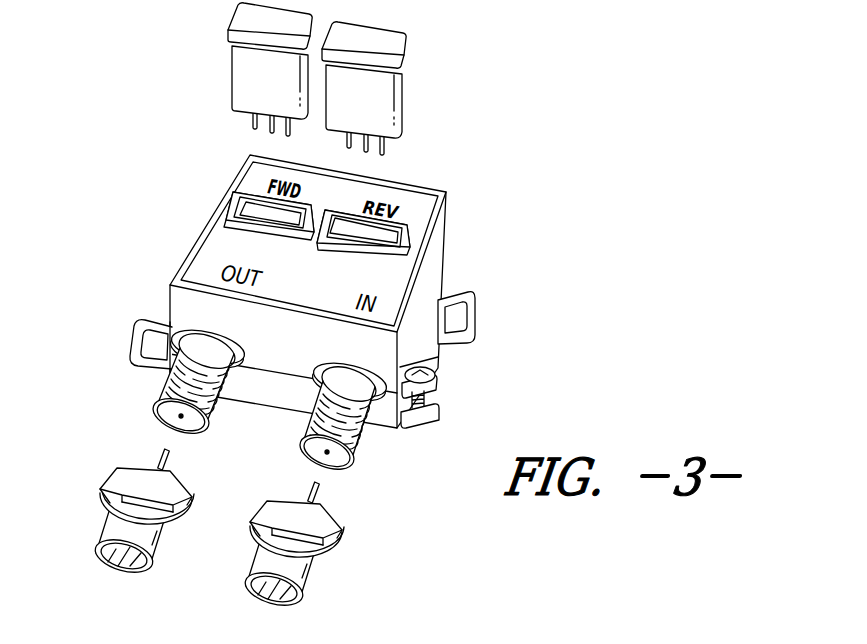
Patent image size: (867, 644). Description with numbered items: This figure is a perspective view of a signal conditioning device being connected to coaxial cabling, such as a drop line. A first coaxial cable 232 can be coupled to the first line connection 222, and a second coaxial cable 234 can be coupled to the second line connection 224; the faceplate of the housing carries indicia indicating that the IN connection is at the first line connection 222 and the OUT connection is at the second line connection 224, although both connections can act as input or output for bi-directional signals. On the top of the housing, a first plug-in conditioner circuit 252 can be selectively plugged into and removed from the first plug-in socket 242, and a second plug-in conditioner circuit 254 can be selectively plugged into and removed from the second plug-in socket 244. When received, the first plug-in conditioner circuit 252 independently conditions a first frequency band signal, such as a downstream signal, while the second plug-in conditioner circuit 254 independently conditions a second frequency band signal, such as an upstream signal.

The first line connection 222 is at (365, 437).
The second line connection 224 is at (157, 388).
The first coaxial cable 232 is at (344, 535).
The second coaxial cable 234 is at (100, 483).
The first plug-in socket 242 is at (237, 205).
The second plug-in socket 244 is at (413, 219).
The first plug-in conditioner circuit 252 is at (230, 87).
The second plug-in conditioner circuit 254 is at (407, 105).